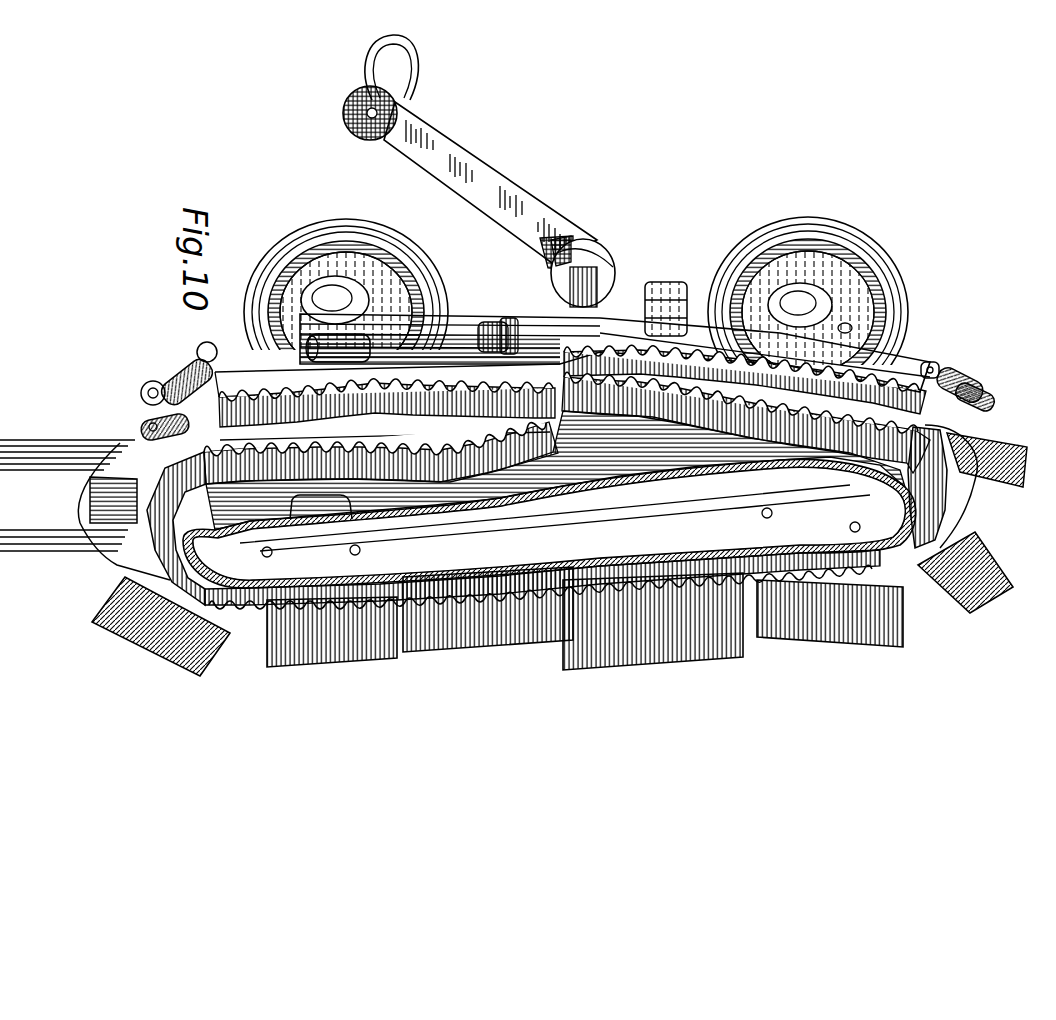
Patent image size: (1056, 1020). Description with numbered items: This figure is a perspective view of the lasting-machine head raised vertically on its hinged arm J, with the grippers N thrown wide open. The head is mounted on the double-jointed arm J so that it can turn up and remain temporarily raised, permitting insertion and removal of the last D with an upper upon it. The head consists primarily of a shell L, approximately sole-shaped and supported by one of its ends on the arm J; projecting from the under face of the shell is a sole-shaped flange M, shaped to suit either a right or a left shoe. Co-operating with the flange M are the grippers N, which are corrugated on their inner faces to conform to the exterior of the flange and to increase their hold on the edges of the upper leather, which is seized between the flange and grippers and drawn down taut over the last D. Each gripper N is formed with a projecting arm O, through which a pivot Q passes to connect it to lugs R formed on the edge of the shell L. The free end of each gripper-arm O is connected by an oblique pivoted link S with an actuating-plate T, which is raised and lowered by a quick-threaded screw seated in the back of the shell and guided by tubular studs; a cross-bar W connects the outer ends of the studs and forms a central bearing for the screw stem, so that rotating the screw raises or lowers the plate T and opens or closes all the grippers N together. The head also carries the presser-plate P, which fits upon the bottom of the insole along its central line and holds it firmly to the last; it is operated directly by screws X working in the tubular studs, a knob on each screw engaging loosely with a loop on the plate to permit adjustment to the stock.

The last D is at (598, 285).
The screws X is at (576, 312).
The projecting arm O is at (470, 312).
The cross-bar W is at (337, 303).
The lugs R is at (497, 327).
The oblique pivoted link S is at (515, 330).
The pivot Q is at (207, 355).
The actuating-plate T is at (283, 397).
The shell L is at (157, 397).
The grippers N is at (710, 343).
The sole-shaped flange M is at (135, 553).
The presser-plate P is at (549, 523).
The double-jointed arm J is at (67, 495).